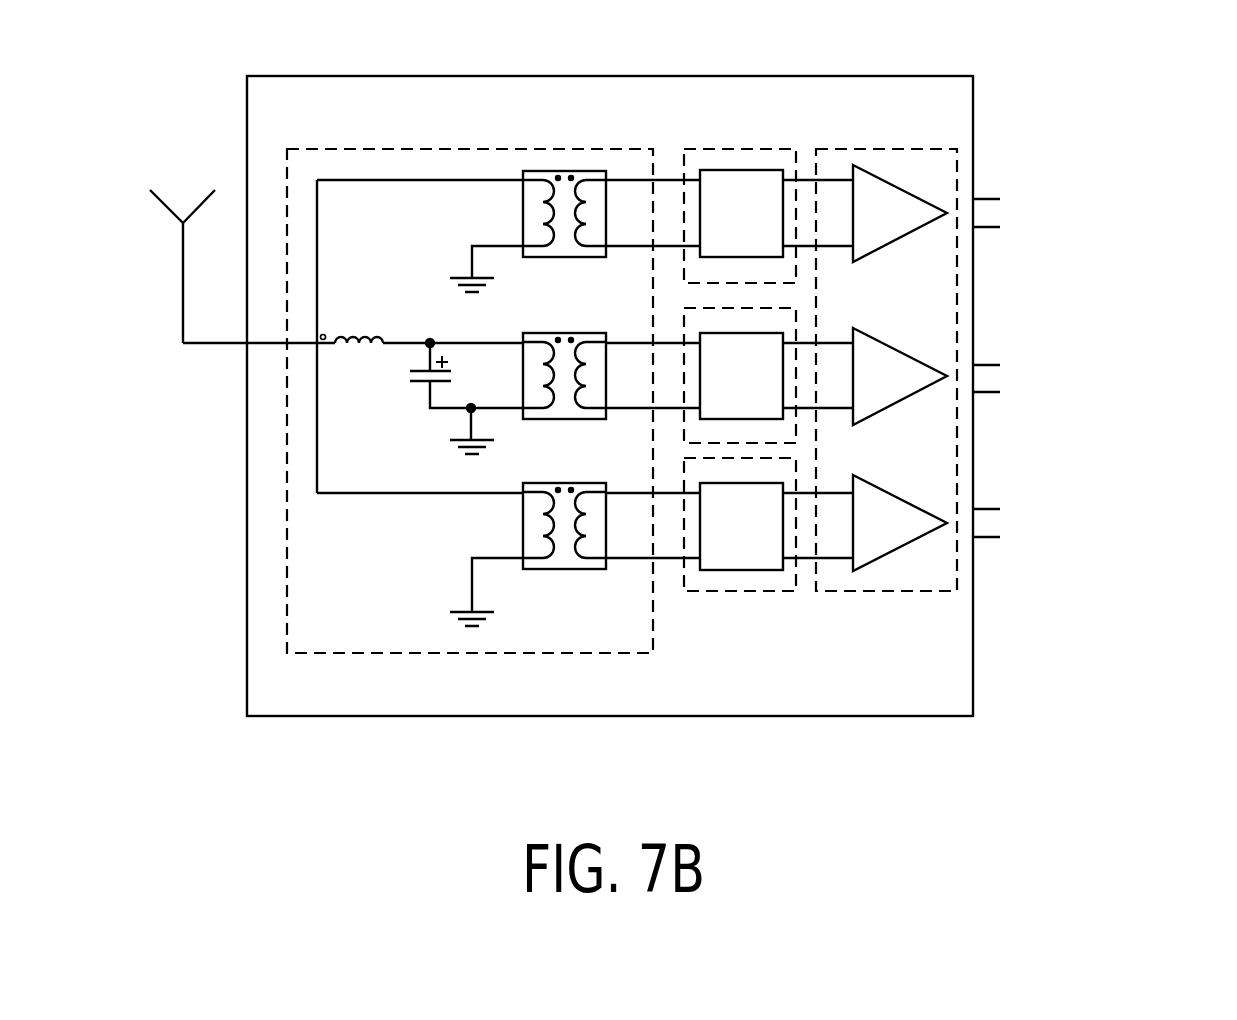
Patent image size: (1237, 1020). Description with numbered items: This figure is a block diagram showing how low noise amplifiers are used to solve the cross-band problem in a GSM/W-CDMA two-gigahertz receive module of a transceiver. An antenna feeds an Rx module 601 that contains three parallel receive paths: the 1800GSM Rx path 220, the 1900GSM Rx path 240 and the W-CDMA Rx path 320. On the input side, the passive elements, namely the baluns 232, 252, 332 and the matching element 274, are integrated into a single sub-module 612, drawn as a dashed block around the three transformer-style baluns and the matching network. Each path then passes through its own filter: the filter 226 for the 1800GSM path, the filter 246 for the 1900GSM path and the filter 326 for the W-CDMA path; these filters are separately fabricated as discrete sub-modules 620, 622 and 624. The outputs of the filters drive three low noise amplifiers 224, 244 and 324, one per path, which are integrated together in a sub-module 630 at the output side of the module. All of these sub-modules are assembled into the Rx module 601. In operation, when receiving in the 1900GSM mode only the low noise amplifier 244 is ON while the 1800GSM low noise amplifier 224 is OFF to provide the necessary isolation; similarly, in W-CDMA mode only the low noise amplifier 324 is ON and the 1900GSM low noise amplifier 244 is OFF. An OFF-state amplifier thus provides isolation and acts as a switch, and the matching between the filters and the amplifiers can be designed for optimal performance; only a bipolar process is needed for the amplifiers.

The Rx module 601 is at (571, 75).
The sub-module 612 is at (308, 571).
The balun 232 is at (571, 170).
The balun 252 is at (566, 333).
The balun 332 is at (541, 483).
The matching element 274 is at (393, 358).
The discrete sub-module 620 is at (733, 158).
The discrete sub-module 622 is at (782, 308).
The discrete sub-module 624 is at (735, 580).
The sub-module 630 is at (918, 571).
The filter 226 is at (741, 213).
The filter 246 is at (741, 376).
The filter 326 is at (741, 526).
The low noise amplifier 224 is at (900, 213).
The low noise amplifier 244 is at (900, 376).
The low noise amplifier 324 is at (900, 523).
The 1800GSM Rx path 220 is at (1040, 189).
The 1900GSM Rx path 240 is at (1040, 360).
The W-CDMA Rx path 320 is at (1040, 505).